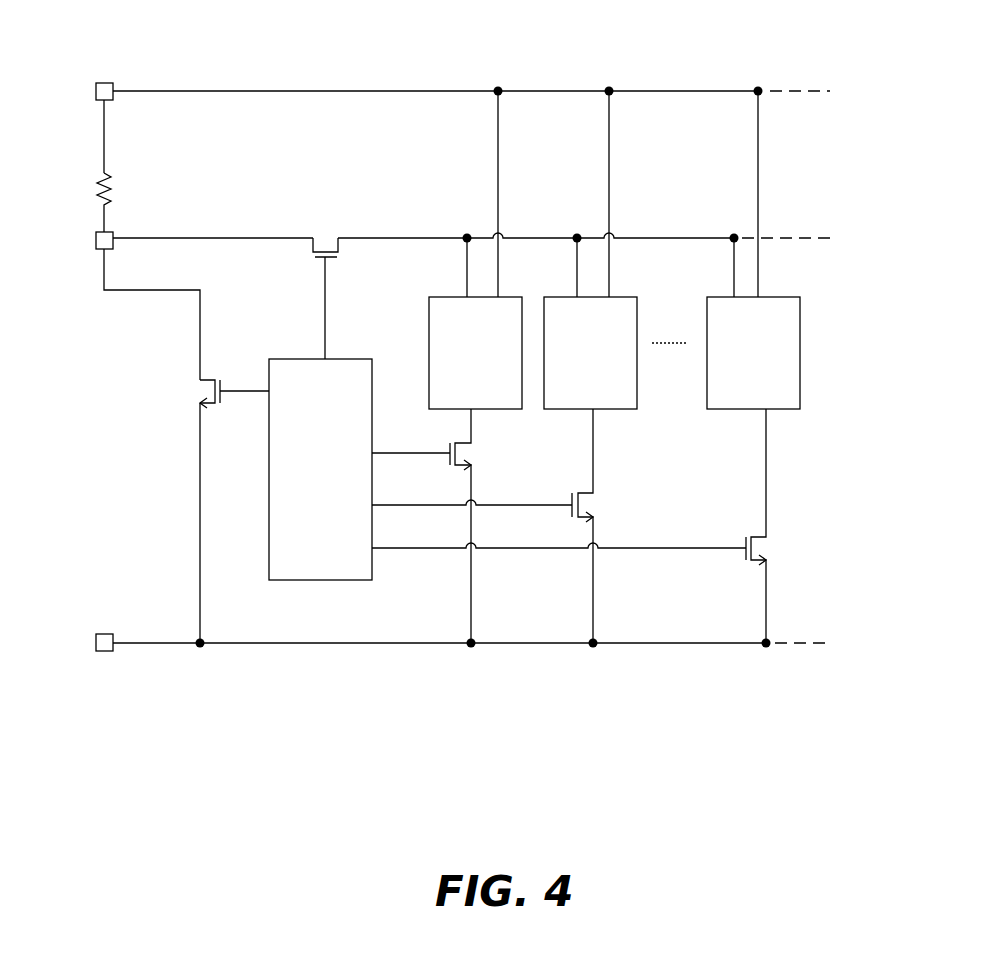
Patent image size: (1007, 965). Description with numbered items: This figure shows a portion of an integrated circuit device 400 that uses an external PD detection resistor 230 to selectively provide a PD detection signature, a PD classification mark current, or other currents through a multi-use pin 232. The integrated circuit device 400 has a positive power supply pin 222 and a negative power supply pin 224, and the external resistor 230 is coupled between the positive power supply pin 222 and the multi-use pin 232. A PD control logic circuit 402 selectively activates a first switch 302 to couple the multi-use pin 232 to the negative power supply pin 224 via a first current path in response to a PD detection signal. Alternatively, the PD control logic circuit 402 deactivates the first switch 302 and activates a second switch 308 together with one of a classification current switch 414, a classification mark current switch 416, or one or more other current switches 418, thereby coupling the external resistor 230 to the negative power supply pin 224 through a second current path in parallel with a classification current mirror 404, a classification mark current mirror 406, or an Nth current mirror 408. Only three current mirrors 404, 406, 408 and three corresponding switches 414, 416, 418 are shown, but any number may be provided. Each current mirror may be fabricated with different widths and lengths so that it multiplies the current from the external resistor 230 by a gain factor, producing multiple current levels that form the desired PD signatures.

The integrated circuit device 400 is at (183, 16).
The positive power supply pin 222 is at (100, 83).
The external PD detection resistor 230 is at (112, 186).
The multi-use pin 232 is at (96, 238).
The switch (Q4) 308 is at (290, 261).
The first switch (Q1) 302 is at (148, 414).
The PD control logic circuit 402 is at (308, 358).
The classification current mirror 404 is at (443, 296).
The classification mark current mirror 406 is at (570, 296).
The Nth current mirror 408 is at (720, 296).
The classification current switch 414 is at (485, 444).
The classification mark current switch 416 is at (621, 494).
The other current switch 418 is at (785, 539).
The negative power supply pin 224 is at (99, 633).